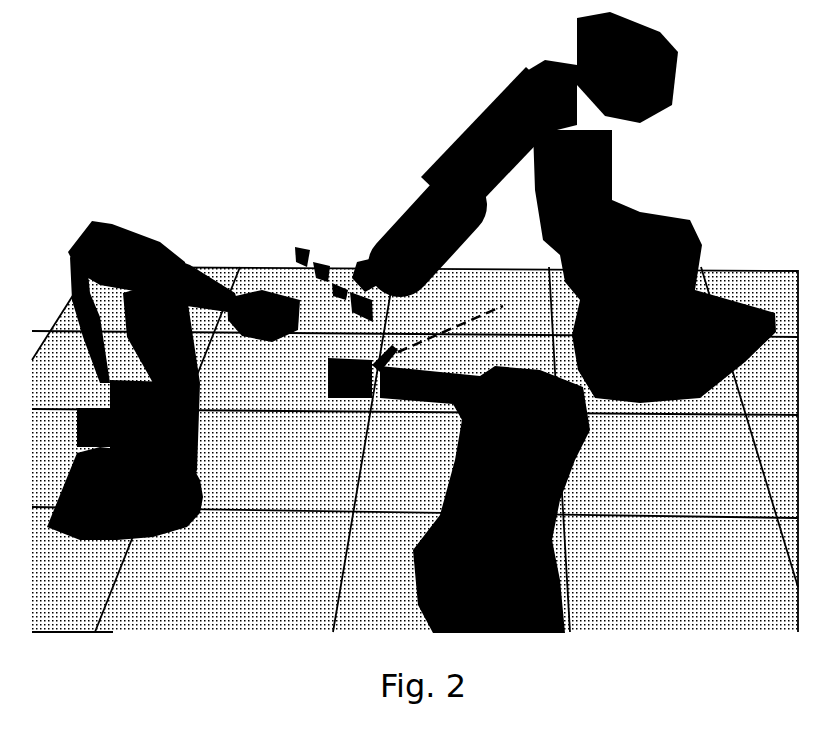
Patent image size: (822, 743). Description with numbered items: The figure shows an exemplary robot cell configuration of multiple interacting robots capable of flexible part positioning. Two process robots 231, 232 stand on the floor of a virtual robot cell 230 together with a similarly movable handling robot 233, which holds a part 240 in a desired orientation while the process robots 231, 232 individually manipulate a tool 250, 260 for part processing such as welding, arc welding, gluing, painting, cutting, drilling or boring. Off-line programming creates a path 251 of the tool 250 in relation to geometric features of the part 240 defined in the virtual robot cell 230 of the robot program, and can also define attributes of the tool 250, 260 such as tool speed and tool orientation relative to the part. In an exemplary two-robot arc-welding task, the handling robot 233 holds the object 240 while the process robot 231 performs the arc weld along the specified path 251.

The virtual robot cell 230 is at (625, 470).
The process robot 231 is at (120, 232).
The process robot 232 is at (450, 478).
The handling robot 233 is at (677, 54).
The part 240 is at (340, 268).
The tool 250 is at (327, 387).
The path 251 is at (473, 317).
The tool 260 is at (300, 284).